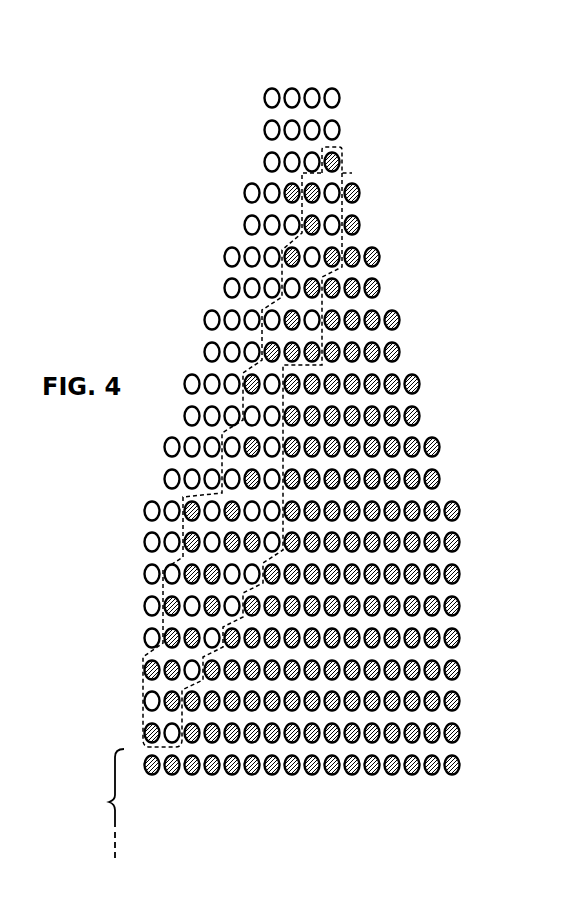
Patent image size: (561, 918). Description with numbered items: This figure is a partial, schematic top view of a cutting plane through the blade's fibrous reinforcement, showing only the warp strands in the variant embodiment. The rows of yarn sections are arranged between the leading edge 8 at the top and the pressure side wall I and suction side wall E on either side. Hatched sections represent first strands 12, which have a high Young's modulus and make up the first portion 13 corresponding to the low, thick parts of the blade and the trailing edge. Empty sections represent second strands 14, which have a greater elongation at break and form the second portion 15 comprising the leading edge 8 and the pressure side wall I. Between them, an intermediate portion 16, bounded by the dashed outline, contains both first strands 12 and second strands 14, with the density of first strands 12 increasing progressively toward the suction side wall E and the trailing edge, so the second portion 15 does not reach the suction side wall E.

The leading edge 8 is at (301, 82).
The first strands 12 is at (377, 736).
The first portion 13 is at (103, 805).
The second strands 14 is at (256, 220).
The second portion 15 is at (283, 184).
The intermediate portion 16 is at (352, 173).
The pressure side wall I is at (139, 478).
The suction side wall E is at (468, 478).